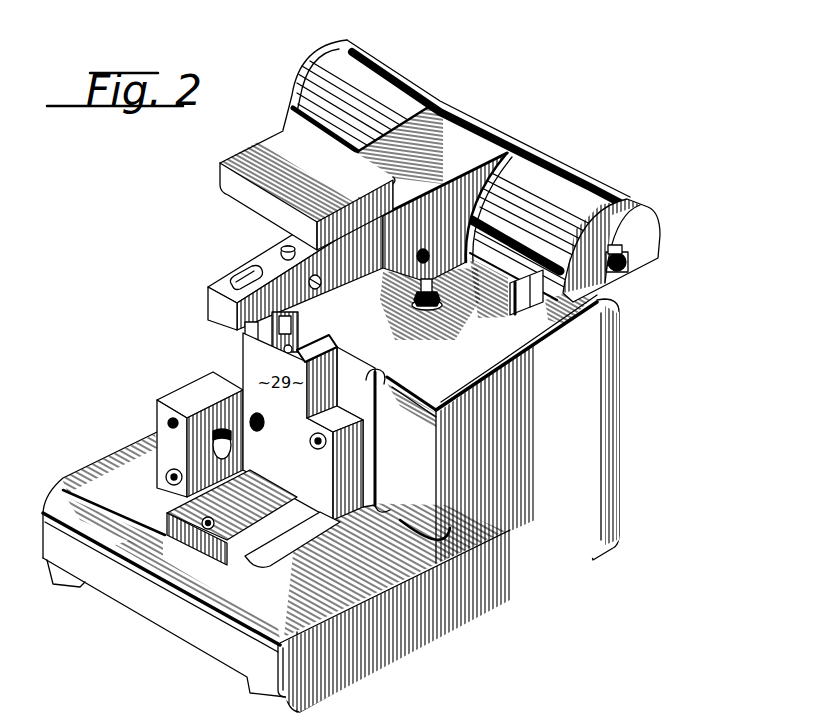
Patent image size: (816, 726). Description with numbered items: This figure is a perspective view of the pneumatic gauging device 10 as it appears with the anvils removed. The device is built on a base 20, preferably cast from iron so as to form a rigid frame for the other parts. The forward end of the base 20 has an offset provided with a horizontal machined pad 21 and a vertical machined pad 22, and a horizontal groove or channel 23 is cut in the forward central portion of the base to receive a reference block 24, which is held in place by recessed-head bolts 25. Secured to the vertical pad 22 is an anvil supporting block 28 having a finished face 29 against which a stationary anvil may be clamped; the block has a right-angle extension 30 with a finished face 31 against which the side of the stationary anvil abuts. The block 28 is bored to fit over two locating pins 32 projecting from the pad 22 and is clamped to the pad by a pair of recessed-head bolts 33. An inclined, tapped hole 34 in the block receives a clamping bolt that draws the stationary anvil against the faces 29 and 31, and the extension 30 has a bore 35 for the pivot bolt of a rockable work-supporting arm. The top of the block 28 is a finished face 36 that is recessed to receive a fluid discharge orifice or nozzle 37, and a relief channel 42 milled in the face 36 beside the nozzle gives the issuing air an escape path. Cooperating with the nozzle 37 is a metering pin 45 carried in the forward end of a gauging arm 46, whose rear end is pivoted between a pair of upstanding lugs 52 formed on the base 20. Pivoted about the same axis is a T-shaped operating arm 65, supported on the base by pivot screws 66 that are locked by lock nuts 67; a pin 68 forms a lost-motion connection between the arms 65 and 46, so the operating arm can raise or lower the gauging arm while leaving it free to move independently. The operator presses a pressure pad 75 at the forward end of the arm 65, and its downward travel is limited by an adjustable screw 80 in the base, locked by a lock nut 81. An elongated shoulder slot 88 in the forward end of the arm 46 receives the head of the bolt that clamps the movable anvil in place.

The gauging device 10 is at (540, 583).
The base 20 is at (600, 432).
The horizontal machined pad 21 is at (262, 553).
The vertical machined pad 22 is at (363, 400).
The horizontal groove or channel 23 is at (160, 532).
The reference block 24 is at (240, 540).
The recessed-head bolts 25 is at (216, 523).
The anvil supporting block 28 is at (353, 450).
The finished face 29 is at (417, 285).
The right-angle extension 30 is at (190, 390).
The finished face 31 is at (237, 402).
The locating pins 32 is at (168, 423).
The recessed-head bolts 33 is at (167, 470).
The inclined tapped hole 34 is at (264, 422).
The bore 35 is at (227, 452).
The finished face 36 is at (330, 339).
The fluid discharge orifice or nozzle 37 is at (283, 348).
The relief channel 42 is at (293, 353).
The metering pin 45 is at (250, 333).
The gauging arm 46 is at (213, 300).
The upstanding lugs 52 is at (537, 300).
The T-shaped operating arm 65 is at (553, 153).
The pivot screws 66 is at (623, 270).
The lock nuts 67 is at (613, 247).
The pin 68 is at (422, 250).
The pressure pad 75 is at (257, 177).
The adjustable screw 80 is at (429, 293).
The lock nut 81 is at (413, 310).
The elongated shoulder slot 88 is at (247, 273).